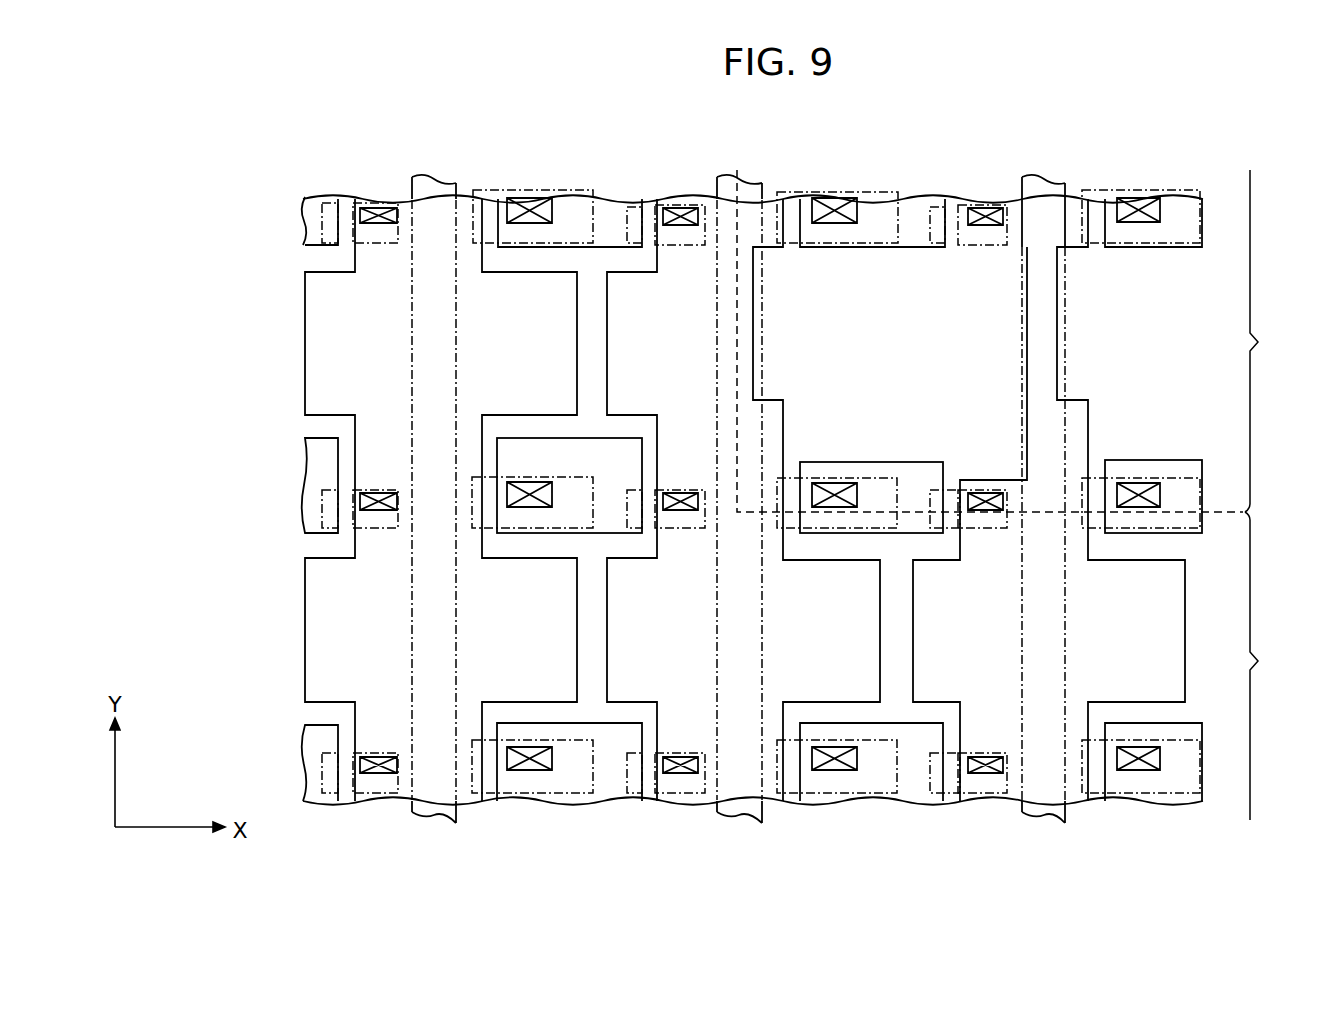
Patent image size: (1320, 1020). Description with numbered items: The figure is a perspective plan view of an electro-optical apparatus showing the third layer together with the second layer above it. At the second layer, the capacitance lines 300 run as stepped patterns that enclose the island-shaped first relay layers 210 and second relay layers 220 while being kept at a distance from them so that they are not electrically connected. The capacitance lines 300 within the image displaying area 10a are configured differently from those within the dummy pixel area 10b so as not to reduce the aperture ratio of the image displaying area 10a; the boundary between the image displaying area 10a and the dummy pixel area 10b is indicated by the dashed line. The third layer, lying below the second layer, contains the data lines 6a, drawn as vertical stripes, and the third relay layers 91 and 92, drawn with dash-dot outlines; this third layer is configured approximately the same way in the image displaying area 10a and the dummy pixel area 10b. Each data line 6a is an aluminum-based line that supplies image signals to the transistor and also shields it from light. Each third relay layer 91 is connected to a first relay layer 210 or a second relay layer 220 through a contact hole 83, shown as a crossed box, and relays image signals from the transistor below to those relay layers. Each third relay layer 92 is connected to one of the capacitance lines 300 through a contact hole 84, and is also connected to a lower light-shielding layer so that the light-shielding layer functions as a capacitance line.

The data line 6a is at (416, 180).
The capacitance line 300 is at (578, 332).
The second relay layer 220 is at (600, 455).
The first relay layer 210 is at (885, 470).
The contact hole 83 is at (527, 487).
The contact hole 84 is at (681, 498).
The third relay layer 91 is at (525, 530).
The third relay layer 92 is at (680, 530).
The image displaying area 10a is at (1019, 341).
The dummy pixel area 10b is at (1273, 666).